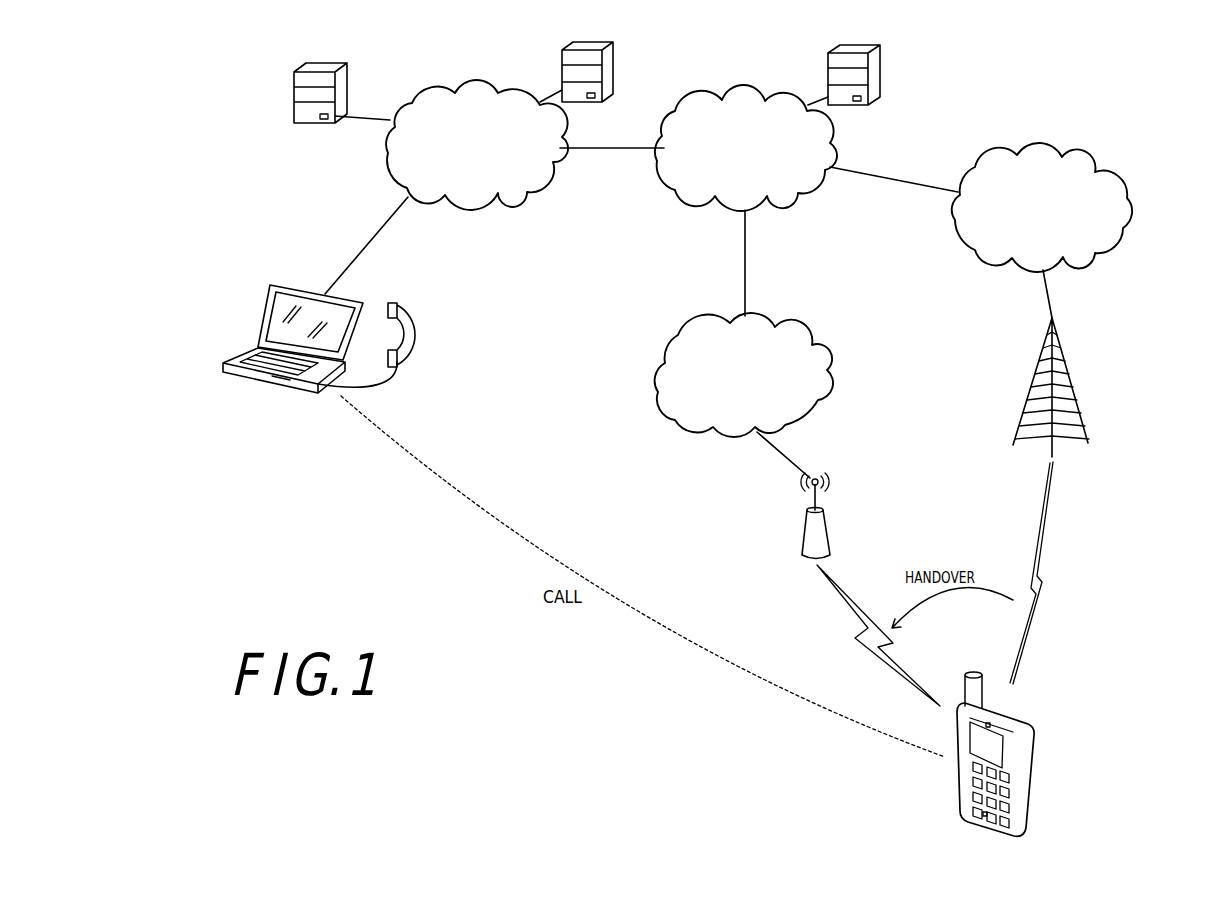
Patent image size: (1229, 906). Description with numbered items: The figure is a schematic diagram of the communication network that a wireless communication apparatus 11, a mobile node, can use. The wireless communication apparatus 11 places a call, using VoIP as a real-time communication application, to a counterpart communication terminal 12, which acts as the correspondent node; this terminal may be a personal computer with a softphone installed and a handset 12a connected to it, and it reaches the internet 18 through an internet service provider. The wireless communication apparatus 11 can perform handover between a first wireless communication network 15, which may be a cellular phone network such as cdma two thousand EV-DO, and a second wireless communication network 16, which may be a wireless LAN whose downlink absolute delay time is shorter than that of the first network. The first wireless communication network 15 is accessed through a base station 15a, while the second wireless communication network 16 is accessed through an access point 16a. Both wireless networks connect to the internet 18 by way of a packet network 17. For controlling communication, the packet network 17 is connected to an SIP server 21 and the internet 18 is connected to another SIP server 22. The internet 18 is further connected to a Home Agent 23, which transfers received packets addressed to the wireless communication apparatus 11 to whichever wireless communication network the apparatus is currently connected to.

The wireless communication apparatus 11 is at (1020, 768).
The counterpart communication terminal 12 is at (258, 322).
The handset 12a is at (413, 343).
The first wireless communication network 15 is at (1099, 150).
The base station 15a is at (1068, 382).
The second wireless communication network 16 is at (841, 363).
The access point 16a is at (807, 530).
The packet network 17 is at (745, 77).
The internet 18 is at (529, 206).
The SIP server 21 is at (882, 67).
The SIP server 22 is at (612, 52).
The Home Agent 23 is at (294, 88).